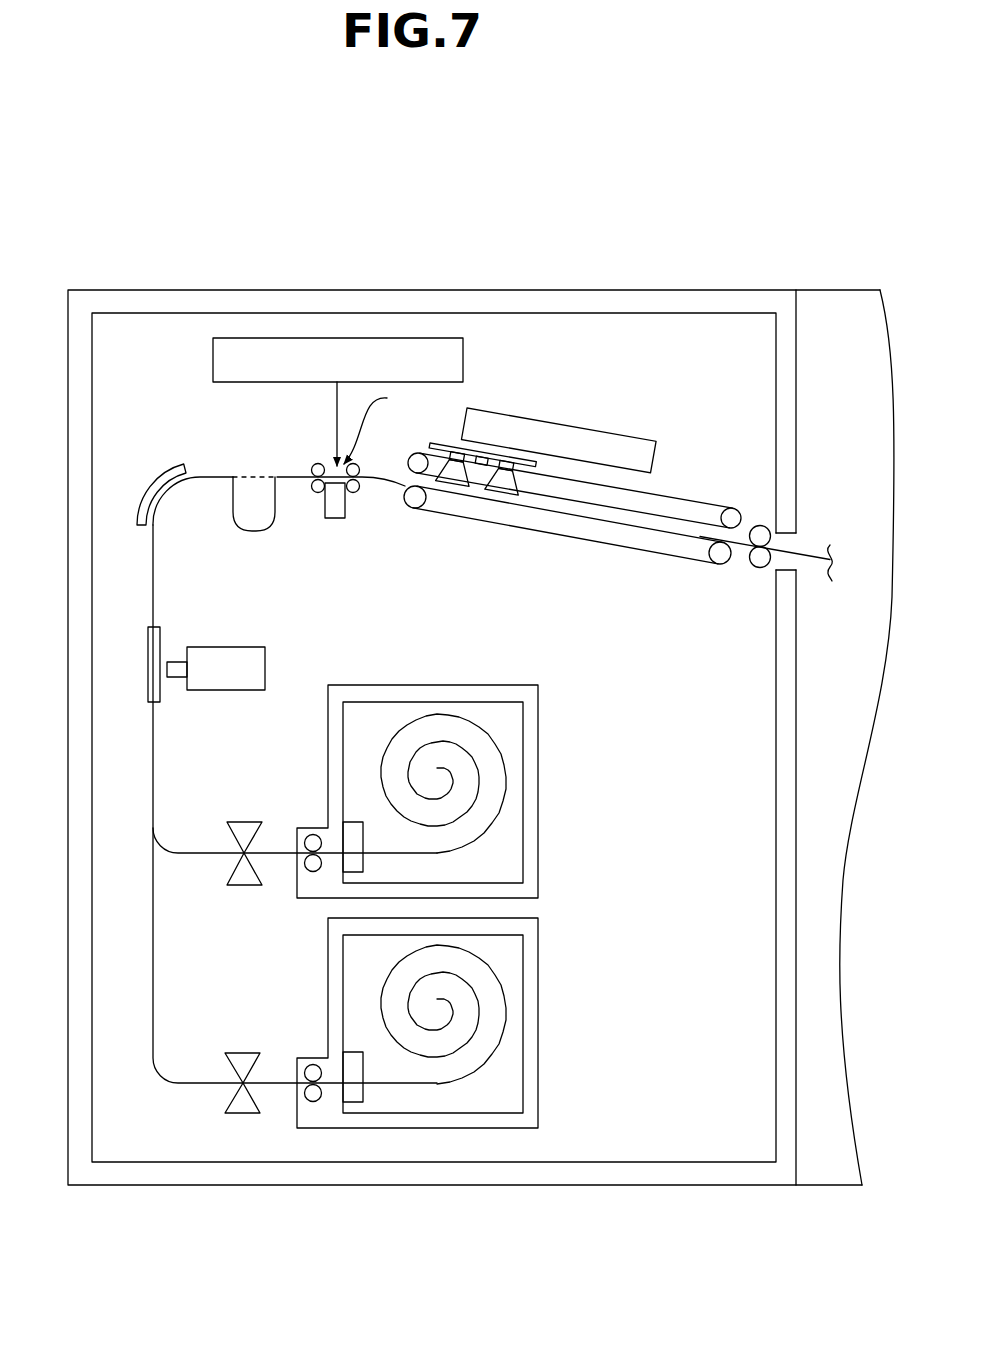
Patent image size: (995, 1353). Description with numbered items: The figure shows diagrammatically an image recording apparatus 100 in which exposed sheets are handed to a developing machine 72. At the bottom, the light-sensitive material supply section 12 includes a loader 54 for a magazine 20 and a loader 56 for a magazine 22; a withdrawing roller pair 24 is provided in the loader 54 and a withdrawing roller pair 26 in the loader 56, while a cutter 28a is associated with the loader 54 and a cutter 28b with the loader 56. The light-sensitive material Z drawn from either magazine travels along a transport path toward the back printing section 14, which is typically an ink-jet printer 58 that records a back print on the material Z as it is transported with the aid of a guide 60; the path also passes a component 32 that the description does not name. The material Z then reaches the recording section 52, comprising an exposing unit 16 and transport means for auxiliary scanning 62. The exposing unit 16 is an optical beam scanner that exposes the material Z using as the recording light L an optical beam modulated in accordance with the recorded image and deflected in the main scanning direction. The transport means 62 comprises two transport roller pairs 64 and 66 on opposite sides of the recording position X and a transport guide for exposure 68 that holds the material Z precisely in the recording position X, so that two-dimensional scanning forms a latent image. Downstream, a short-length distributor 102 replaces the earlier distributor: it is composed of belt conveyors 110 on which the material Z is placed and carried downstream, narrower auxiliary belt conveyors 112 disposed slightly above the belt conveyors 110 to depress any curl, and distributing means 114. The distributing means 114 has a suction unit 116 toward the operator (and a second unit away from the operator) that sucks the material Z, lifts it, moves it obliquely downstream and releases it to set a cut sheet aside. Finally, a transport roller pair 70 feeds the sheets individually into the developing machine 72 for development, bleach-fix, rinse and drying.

The image recording apparatus 100 is at (481, 643).
The developing machine 72 is at (836, 311).
The exposing unit 16 is at (411, 360).
The recording light L is at (336, 417).
The recording position X is at (375, 421).
The recording section 52 is at (216, 410).
The back printing section 14 is at (176, 708).
The buffer portion 32 is at (229, 528).
The transport means for auxiliary scanning 62 is at (317, 510).
The transport roller pair 64 is at (311, 470).
The transport roller pair 66 is at (356, 492).
The transport guide for exposure 68 is at (335, 518).
The short-length distributor 102 is at (585, 485).
The distributing means 114 is at (555, 415).
The suction unit 116 is at (477, 486).
The auxiliary belt conveyor 112 is at (664, 490).
The belt conveyor 110 is at (608, 548).
The transport roller pair 70 is at (752, 566).
The light-sensitive material Z is at (809, 550).
The ink-jet printer 58 is at (250, 668).
The guide 60 is at (147, 668).
The cutter 28a is at (245, 880).
The cutter 28b is at (243, 1052).
The light-sensitive material supply section 12 is at (443, 898).
The loader 54 is at (540, 800).
The magazine 20 is at (523, 858).
The withdrawing roller pair 24 is at (312, 834).
The loader 56 is at (540, 1042).
The magazine 22 is at (523, 995).
The withdrawing roller pair 26 is at (312, 1065).